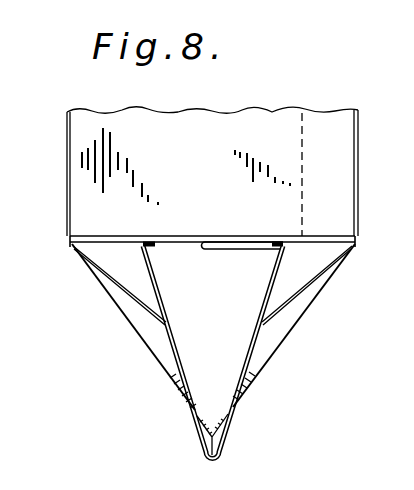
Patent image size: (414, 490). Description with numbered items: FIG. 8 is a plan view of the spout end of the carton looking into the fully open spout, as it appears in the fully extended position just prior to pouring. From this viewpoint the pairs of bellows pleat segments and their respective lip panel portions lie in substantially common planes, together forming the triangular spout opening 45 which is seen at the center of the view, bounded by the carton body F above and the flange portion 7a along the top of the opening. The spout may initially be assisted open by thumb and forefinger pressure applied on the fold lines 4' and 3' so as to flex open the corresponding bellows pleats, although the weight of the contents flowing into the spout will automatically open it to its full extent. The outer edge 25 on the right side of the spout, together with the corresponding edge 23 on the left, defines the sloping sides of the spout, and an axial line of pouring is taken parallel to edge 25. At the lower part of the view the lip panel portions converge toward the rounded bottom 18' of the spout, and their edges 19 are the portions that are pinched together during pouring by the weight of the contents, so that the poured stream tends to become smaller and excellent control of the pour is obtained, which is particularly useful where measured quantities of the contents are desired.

The furniture body F is at (227, 167).
The flange tongue 7a is at (186, 236).
The triangular spout opening 45 is at (238, 304).
The V-shaped bottom loop 18' is at (245, 434).
The fold line 3' is at (105, 285).
The fold line 4' is at (307, 285).
The left diagonal brace 23 is at (134, 329).
The edge 25 is at (276, 346).
The lip edge 19 is at (173, 372).